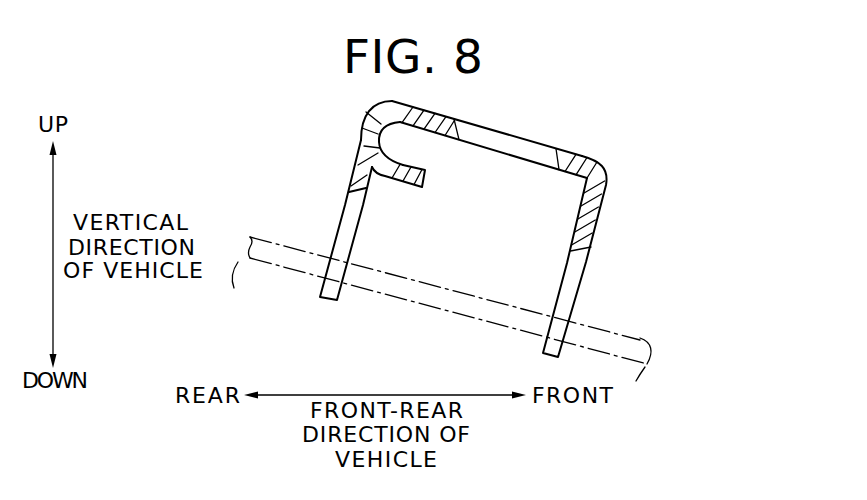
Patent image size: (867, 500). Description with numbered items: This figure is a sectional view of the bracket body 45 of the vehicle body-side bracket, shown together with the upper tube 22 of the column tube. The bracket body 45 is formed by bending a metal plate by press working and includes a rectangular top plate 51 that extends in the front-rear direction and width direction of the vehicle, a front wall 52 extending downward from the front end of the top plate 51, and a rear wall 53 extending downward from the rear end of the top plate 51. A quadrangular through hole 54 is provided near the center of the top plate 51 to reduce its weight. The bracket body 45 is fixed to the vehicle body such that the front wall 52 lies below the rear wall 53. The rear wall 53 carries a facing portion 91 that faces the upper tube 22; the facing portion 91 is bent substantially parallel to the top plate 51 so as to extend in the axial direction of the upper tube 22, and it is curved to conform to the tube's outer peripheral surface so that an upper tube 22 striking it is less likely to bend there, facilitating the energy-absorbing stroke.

The upper tube 22 is at (453, 290).
The bracket body 45 is at (523, 227).
The top plate 51 is at (440, 113).
The front wall 52 is at (597, 220).
The rear wall 53 is at (364, 127).
The through hole 54 is at (556, 160).
The facing portion 91 is at (404, 178).